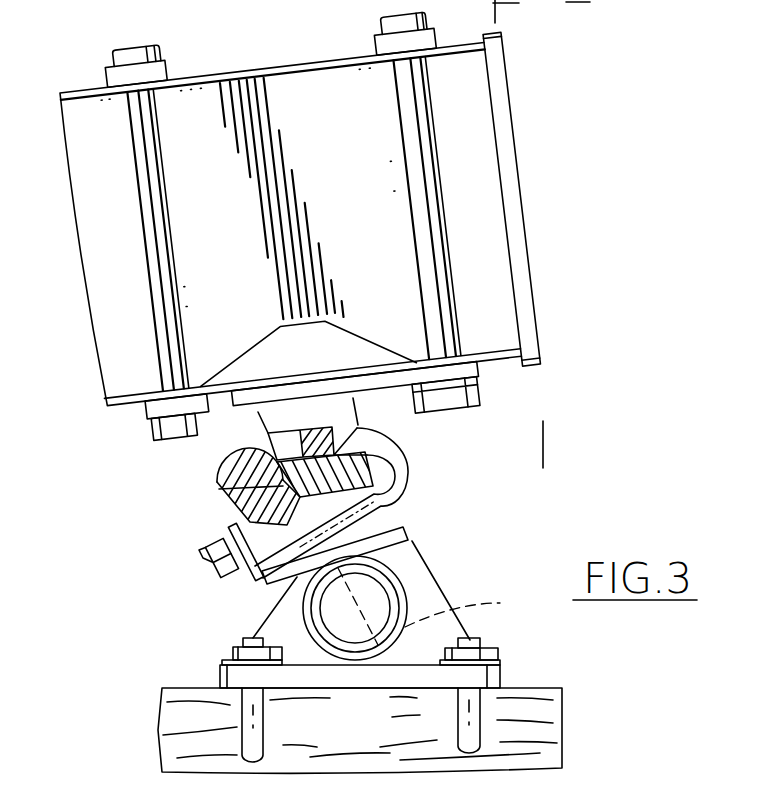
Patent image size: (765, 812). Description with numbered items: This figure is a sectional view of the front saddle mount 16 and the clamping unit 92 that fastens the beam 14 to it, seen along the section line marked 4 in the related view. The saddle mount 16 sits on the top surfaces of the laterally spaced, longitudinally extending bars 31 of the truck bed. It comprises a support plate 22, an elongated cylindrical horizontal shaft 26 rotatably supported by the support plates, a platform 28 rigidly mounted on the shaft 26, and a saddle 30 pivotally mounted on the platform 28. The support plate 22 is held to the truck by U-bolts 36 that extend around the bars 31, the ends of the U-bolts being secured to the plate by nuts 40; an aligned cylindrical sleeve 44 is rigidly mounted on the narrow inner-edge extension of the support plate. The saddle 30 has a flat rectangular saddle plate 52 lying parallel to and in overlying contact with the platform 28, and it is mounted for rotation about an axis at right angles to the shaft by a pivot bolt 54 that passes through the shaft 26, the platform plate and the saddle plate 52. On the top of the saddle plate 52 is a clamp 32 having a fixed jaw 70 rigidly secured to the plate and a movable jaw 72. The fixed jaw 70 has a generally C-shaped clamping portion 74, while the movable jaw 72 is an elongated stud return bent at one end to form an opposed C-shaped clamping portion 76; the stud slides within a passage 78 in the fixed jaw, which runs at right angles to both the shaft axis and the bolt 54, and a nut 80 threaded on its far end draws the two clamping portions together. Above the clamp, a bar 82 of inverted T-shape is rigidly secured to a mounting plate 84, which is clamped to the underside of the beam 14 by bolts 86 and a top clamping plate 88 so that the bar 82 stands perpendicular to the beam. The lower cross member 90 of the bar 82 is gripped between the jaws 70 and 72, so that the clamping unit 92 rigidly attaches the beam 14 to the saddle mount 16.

The section line 4- 4 is at (549, 466).
The beam 14 is at (257, 70).
The front saddle mount 16 is at (134, 595).
The support plate 22 is at (220, 670).
The shaft 26 is at (410, 588).
The platform 28 is at (407, 528).
The saddle 30 is at (427, 487).
The bar 31 is at (562, 687).
The clamp 32 is at (173, 528).
The U-bolt 36 is at (297, 719).
The nut 40 is at (228, 655).
The cylindrical sleeve 44 is at (412, 612).
The saddle plate 52 is at (280, 570).
The pivot bolt 54 is at (500, 603).
The fixed jaw 70 is at (216, 462).
The movable jaw 72 is at (205, 563).
The C-shaped clamping portion 74 is at (244, 446).
The C-shaped clamping portion 76 is at (406, 450).
The passage 78 is at (248, 528).
The nut 80 is at (212, 578).
The bar 82 is at (362, 410).
The mounting plate 84 is at (258, 345).
The bolt 86 is at (143, 50).
The top clamping plate 88 is at (103, 78).
The lower cross member 90 is at (219, 489).
The clamping unit 92 is at (131, 444).